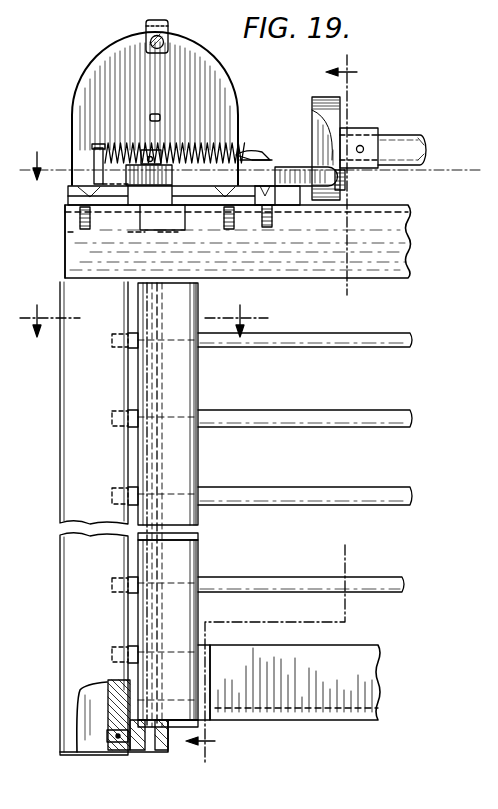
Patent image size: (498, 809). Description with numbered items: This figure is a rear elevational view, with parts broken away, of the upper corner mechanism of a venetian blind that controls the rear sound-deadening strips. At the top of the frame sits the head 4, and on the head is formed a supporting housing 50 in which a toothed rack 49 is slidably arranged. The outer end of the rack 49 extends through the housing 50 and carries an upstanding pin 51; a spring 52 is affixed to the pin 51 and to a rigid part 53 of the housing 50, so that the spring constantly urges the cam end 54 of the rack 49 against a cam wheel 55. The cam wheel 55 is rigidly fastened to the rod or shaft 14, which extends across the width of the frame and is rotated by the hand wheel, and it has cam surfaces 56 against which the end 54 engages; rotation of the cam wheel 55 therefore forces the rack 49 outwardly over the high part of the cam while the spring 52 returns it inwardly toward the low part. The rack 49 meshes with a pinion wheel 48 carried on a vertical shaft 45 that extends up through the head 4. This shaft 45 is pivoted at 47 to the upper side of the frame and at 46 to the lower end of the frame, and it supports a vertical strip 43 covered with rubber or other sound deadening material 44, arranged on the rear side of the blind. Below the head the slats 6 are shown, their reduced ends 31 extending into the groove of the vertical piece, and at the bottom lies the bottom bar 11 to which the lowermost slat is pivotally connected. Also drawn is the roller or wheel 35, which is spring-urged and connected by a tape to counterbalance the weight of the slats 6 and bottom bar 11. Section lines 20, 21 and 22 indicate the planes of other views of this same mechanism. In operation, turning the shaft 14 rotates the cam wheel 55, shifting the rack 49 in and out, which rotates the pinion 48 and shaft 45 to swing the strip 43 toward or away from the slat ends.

The head 4 is at (410, 237).
The slats 6 is at (314, 333).
The bottom bar 11 is at (365, 675).
The rod or shaft 14 is at (412, 140).
The section line 20- 20 is at (285, 410).
The section line 21- 21 is at (250, 155).
The section line 22- 22 is at (144, 308).
The reduced ends of slats 31 is at (112, 494).
The roller or wheel 35 is at (115, 62).
The vertical strips 43 is at (185, 368).
The sound deadening material 44 is at (198, 397).
The vertical shafts 45 is at (160, 455).
The lower pivot 46 is at (141, 752).
The upper pivot 47 is at (128, 218).
The pinion wheel 48 is at (160, 185).
The toothed rack 49 is at (290, 174).
The supporting housing 50 is at (268, 196).
The upstanding pin 51 is at (98, 145).
The spring 52 is at (125, 141).
The rigid part of housing 53 is at (258, 152).
The cam end of rack 54 is at (345, 180).
The cam wheel 55 is at (312, 108).
The cam surfaces 56 is at (334, 136).